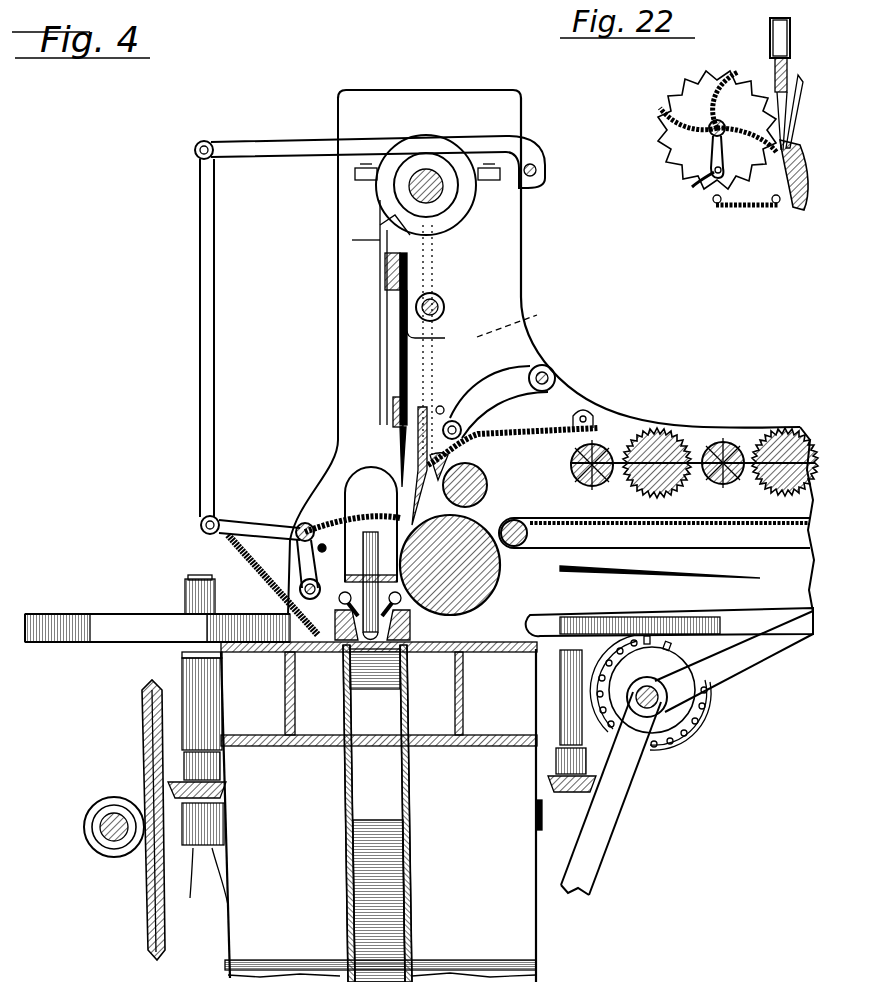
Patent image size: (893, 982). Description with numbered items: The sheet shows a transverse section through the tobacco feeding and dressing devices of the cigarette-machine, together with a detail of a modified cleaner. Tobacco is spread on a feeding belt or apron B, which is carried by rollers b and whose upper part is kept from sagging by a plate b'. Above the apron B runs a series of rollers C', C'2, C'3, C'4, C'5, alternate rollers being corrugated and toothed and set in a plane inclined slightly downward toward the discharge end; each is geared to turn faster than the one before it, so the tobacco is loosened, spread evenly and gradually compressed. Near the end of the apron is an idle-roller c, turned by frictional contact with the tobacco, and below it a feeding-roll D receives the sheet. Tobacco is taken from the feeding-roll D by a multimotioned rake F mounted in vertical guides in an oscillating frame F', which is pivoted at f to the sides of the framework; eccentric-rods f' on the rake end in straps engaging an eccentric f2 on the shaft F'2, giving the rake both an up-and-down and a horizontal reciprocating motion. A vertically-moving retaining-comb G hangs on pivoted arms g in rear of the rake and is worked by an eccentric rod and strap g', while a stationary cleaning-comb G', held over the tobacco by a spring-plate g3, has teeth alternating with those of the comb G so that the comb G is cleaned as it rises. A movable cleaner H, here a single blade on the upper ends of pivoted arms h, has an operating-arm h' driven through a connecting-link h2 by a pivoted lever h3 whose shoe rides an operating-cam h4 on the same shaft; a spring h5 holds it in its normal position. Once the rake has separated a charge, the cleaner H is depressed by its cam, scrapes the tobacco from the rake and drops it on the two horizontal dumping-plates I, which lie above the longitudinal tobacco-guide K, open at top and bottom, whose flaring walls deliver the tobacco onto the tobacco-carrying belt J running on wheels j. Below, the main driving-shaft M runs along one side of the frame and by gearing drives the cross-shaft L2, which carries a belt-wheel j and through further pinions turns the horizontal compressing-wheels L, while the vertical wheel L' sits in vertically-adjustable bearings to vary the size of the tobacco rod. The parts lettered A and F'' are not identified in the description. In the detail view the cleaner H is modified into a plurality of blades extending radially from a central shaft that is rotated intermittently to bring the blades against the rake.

In FIG. 4, the pivoted lever h3 is at (300, 142).
In FIG. 4, the operating-cam h4 is at (428, 160).
In FIG. 4, the connecting-link h2 is at (200, 445).
In FIG. 4, the operating-arm h' is at (259, 515).
In FIG. 4, the pivoted arms h is at (294, 568).
In FIG. 4, the spring h5 is at (262, 585).
In FIG. 4, the oscillating frame F' is at (547, 352).
In FIG. 4, the eccentric f2 is at (385, 162).
In FIG. 4, the eccentric-rods f' is at (340, 250).
In FIG. 4, the shaft F'2 is at (516, 199).
In FIG. 4, the guide slot F'' is at (444, 299).
In FIG. 4, the pivot f is at (445, 308).
In FIG. 4, the eccentric rod and strap g' is at (522, 321).
In FIG. 4, the pivoted arms g is at (495, 392).
In FIG. 4, the spring-plate g3 is at (545, 428).
In FIG. 4, the retaining-comb G is at (382, 466).
In FIG. 4, the cleaning-comb G' is at (404, 473).
In FIG. 4, the idle-roller c is at (465, 485).
In FIG. 4, the roller C'5 is at (602, 423).
In FIG. 4, the roller C'4 is at (649, 436).
In FIG. 4, the roller C'3 is at (708, 439).
In FIG. 4, the roller C'2 is at (775, 437).
In FIG. 4, the roller C' is at (794, 405).
In FIG. 4, the feeding belt or apron B is at (655, 566).
In FIG. 4, the rollers b is at (532, 541).
In FIG. 4, the plate b' is at (670, 538).
In FIG. 4, the feeding-roll D is at (498, 585).
In FIG. 22, the feeding-roll D is at (792, 212).
In FIG. 4, the movable cleaner H is at (320, 524).
In FIG. 22, the movable cleaner H is at (697, 129).
In FIG. 4, the tobacco-guide K is at (412, 625).
In FIG. 4, the frame A is at (381, 812).
In FIG. 4, the dumping-plates I is at (330, 653).
In FIG. 22, the dumping-plates I is at (758, 210).
In FIG. 4, the tobacco-carrying belt J is at (372, 652).
In FIG. 4, the belt-wheels j is at (402, 816).
In FIG. 4, the horizontal compressing-wheels L is at (419, 740).
In FIG. 4, the vertical wheel L' is at (374, 692).
In FIG. 4, the cross-shaft L2 is at (204, 884).
In FIG. 4, the main driving-shaft M is at (108, 830).
In FIG. 22, the multimotioned rake F is at (731, 102).